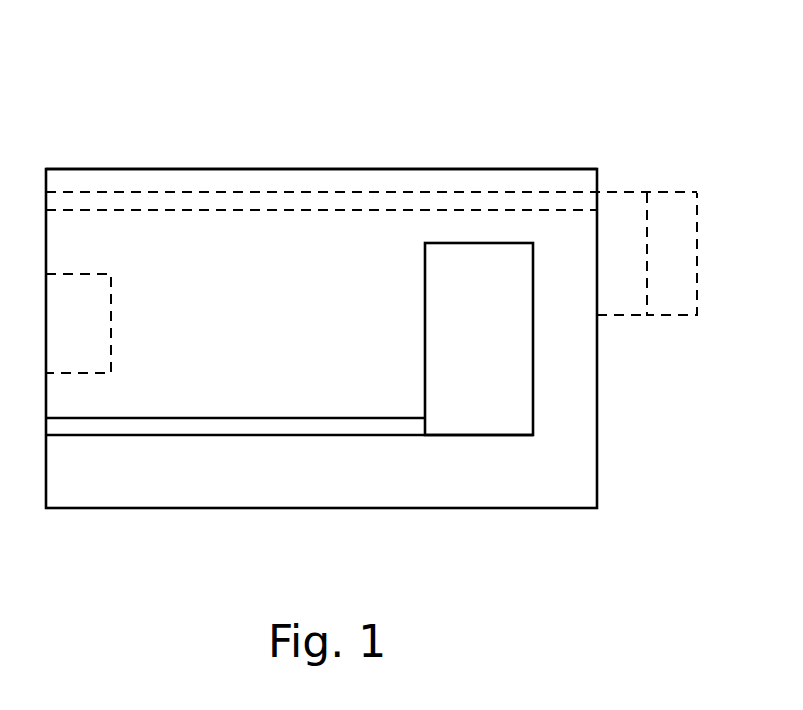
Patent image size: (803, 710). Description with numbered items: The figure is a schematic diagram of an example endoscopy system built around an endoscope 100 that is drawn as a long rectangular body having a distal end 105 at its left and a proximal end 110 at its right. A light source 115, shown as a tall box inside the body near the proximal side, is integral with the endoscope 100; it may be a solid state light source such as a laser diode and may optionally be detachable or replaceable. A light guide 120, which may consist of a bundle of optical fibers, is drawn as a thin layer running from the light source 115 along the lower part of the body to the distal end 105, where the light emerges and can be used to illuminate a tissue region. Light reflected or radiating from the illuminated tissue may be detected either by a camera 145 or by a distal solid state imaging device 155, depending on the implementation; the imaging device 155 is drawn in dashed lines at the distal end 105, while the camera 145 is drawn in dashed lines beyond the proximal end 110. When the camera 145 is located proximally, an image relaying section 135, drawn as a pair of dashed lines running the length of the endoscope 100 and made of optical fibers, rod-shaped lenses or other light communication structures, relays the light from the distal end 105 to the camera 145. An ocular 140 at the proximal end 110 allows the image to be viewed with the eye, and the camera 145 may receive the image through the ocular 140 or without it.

The endoscope 100 is at (533, 107).
The distal end 105 is at (46, 169).
The proximal end 110 is at (597, 170).
The light source 115 is at (425, 331).
The light guide 120 is at (316, 437).
The image relaying section 135 is at (255, 211).
The ocular 140 is at (628, 316).
The camera 145 is at (697, 210).
The distal solid state imaging device 155 is at (112, 291).